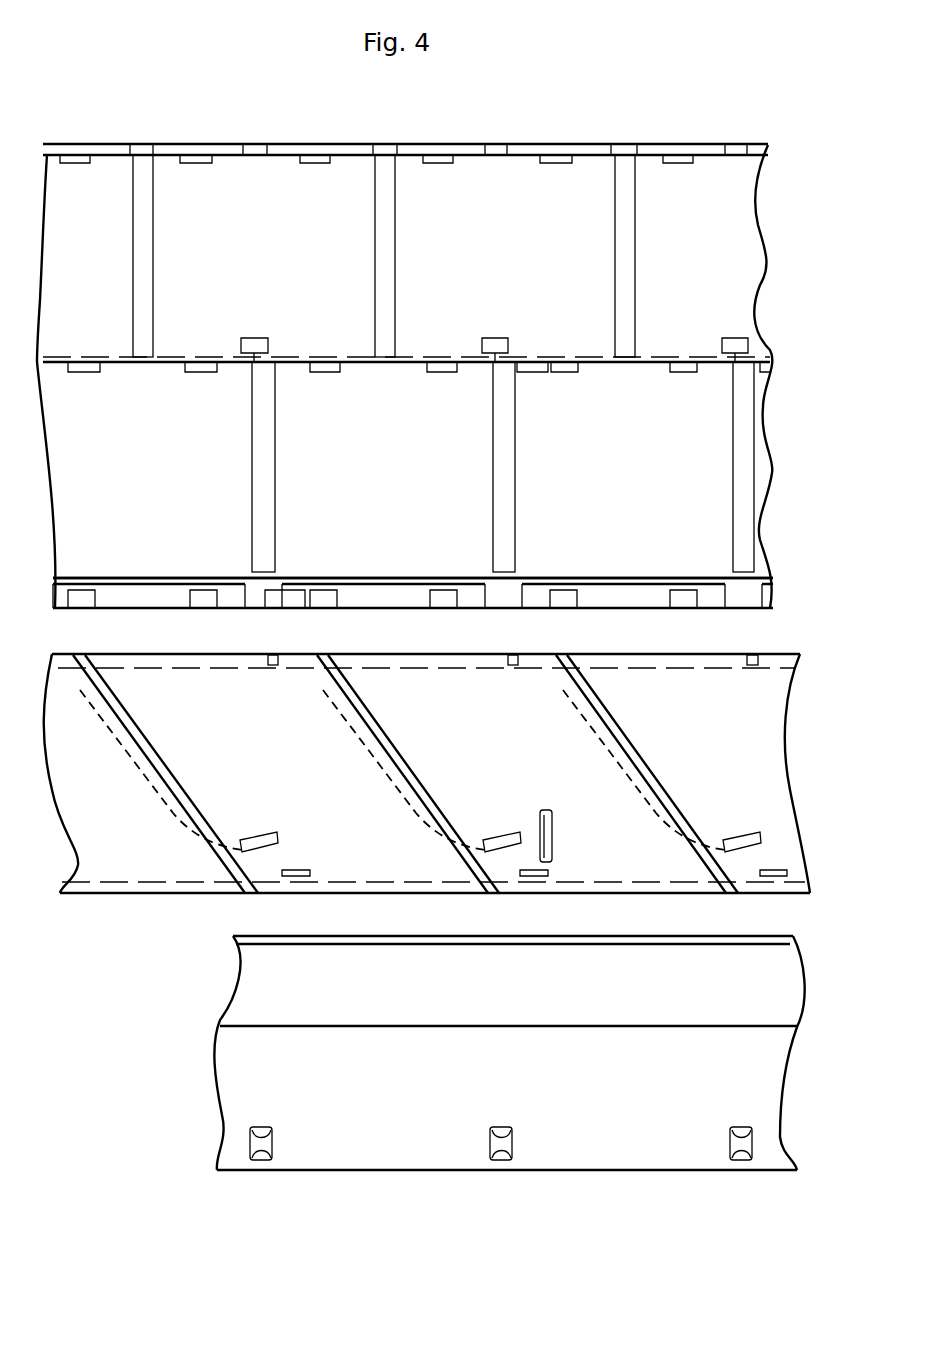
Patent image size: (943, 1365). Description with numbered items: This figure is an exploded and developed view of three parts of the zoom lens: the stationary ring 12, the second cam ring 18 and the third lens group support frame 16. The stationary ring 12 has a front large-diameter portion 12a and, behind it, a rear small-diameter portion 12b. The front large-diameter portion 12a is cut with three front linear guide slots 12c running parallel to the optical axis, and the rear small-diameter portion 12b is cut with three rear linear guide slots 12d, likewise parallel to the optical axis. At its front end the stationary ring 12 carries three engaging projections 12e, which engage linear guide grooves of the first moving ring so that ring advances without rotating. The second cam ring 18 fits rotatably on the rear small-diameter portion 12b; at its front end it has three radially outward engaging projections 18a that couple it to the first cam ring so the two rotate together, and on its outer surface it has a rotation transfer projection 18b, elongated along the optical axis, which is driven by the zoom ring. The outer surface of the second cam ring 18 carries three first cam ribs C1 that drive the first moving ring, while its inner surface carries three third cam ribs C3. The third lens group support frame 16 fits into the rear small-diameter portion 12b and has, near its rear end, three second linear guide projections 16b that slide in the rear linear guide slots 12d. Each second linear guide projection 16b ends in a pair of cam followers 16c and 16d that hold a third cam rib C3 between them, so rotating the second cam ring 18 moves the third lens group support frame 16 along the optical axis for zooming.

The stationary ring 12 is at (454, 376).
The front large-diameter portion 12a is at (730, 310).
The rear small-diameter portion 12b is at (705, 483).
The front linear guide slot 12c is at (378, 275).
The rear linear guide slot 12d is at (268, 476).
The engaging projection 12e is at (252, 148).
The second cam ring 18 is at (427, 773).
The engaging projection 18a is at (278, 662).
The rotation transfer projection 18b is at (546, 812).
The first cam rib C1 is at (175, 766).
The third cam rib C3 is at (385, 780).
The third lens group support frame 16 is at (540, 1101).
The second linear guide projection 16b is at (555, 1162).
The cam follower 16c is at (268, 1128).
The cam follower 16d is at (258, 1160).